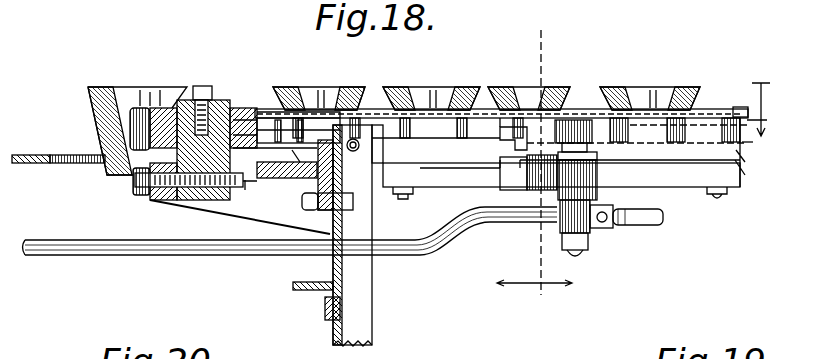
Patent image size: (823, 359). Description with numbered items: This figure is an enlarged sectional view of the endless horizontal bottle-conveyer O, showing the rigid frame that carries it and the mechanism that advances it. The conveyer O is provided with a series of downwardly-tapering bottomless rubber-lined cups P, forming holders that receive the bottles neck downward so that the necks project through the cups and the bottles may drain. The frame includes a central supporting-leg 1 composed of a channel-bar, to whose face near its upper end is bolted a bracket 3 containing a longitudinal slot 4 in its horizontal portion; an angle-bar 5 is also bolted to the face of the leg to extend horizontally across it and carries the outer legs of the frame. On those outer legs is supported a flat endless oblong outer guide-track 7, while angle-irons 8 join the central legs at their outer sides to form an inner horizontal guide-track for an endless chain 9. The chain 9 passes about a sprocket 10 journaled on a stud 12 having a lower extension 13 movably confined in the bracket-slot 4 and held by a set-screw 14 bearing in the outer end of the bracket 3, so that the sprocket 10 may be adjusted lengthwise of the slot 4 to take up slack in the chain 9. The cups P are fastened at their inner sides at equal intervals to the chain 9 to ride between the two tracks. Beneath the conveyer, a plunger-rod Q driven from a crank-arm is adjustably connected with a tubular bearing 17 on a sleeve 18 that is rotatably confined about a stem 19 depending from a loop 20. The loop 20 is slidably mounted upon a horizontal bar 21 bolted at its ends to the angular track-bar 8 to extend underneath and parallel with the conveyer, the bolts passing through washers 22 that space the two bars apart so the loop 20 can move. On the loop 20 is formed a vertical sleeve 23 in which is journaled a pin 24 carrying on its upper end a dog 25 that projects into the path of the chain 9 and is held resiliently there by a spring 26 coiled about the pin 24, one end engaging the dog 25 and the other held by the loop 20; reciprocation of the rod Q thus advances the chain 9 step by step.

The central supporting-leg 1 is at (363, 298).
The bracket 3 is at (305, 176).
The longitudinal slot 4 is at (250, 170).
The angle-bar 5 is at (312, 290).
The outer guide-track 7 is at (33, 157).
The angle-iron 8 is at (420, 148).
The endless chain 9 is at (130, 125).
The sprocket 10 is at (168, 100).
The stud 12 is at (215, 100).
The lower extension 13 is at (200, 197).
The set-screw 14 is at (138, 192).
The tubular bearing 17 is at (627, 223).
The sleeve 18 is at (578, 222).
The stem 19 is at (773, 109).
The loop 20 is at (757, 150).
The horizontal bar 21 is at (450, 180).
The washer 22 is at (387, 170).
The vertical sleeve 23 is at (580, 173).
The pin 24 is at (572, 117).
The dog 25 is at (507, 137).
The spring 26 is at (597, 137).
The cup P is at (93, 88).
The plunger-rod Q is at (214, 252).
The bottle-conveyer O is at (519, 162).